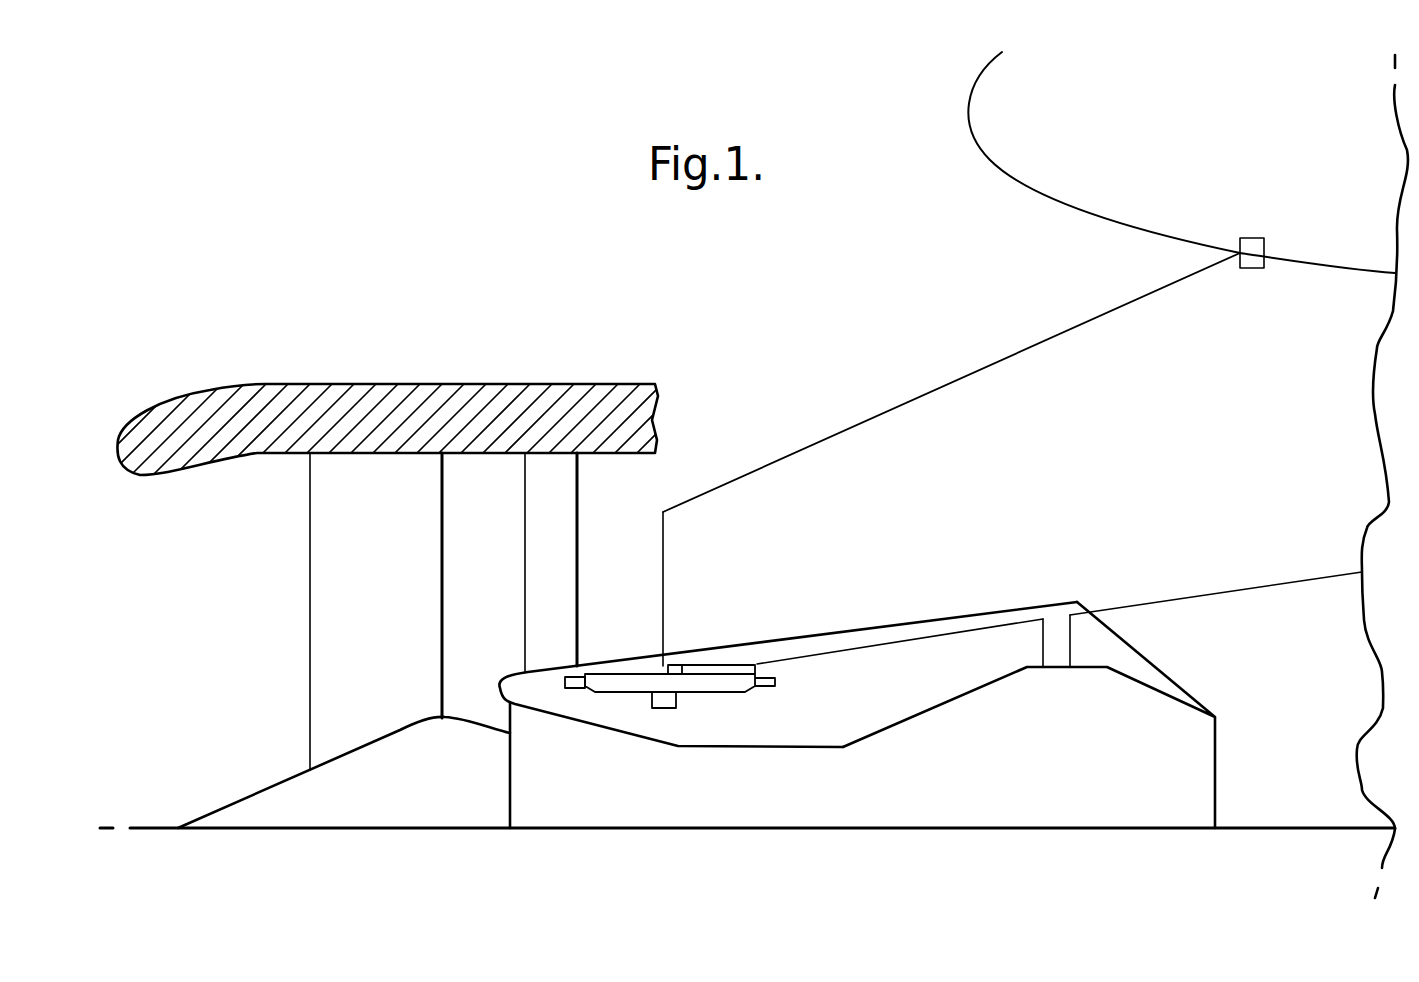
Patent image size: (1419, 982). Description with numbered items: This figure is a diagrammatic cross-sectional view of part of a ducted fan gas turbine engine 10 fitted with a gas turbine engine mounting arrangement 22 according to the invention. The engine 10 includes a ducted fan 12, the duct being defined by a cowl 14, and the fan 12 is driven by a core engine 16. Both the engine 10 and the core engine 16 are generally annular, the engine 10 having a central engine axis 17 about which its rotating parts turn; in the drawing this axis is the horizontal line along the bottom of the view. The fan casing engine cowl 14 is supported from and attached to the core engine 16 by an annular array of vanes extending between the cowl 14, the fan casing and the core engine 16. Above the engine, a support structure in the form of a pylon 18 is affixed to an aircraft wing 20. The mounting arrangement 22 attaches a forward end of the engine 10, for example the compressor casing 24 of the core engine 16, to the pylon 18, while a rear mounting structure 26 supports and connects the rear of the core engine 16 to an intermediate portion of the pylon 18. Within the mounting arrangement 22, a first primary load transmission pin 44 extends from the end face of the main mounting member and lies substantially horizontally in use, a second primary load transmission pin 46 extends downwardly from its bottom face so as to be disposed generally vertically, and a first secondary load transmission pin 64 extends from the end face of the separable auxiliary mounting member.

The ducted fan gas turbine engine 10 is at (398, 842).
The ducted fan 12 is at (342, 632).
The cowl 14 is at (385, 452).
The core engine 16 is at (784, 800).
The central engine axis 17 is at (1266, 832).
The pylon 18 is at (955, 395).
The aircraft wing 20 is at (1090, 192).
The gas turbine engine mounting arrangement 22 is at (558, 682).
The compressor casing 24 is at (613, 775).
The rear mounting structure 26 is at (1058, 637).
The first primary load transmission pin 44 is at (578, 680).
The second primary load transmission pin 46 is at (666, 710).
The first secondary load transmission pin 64 is at (712, 734).